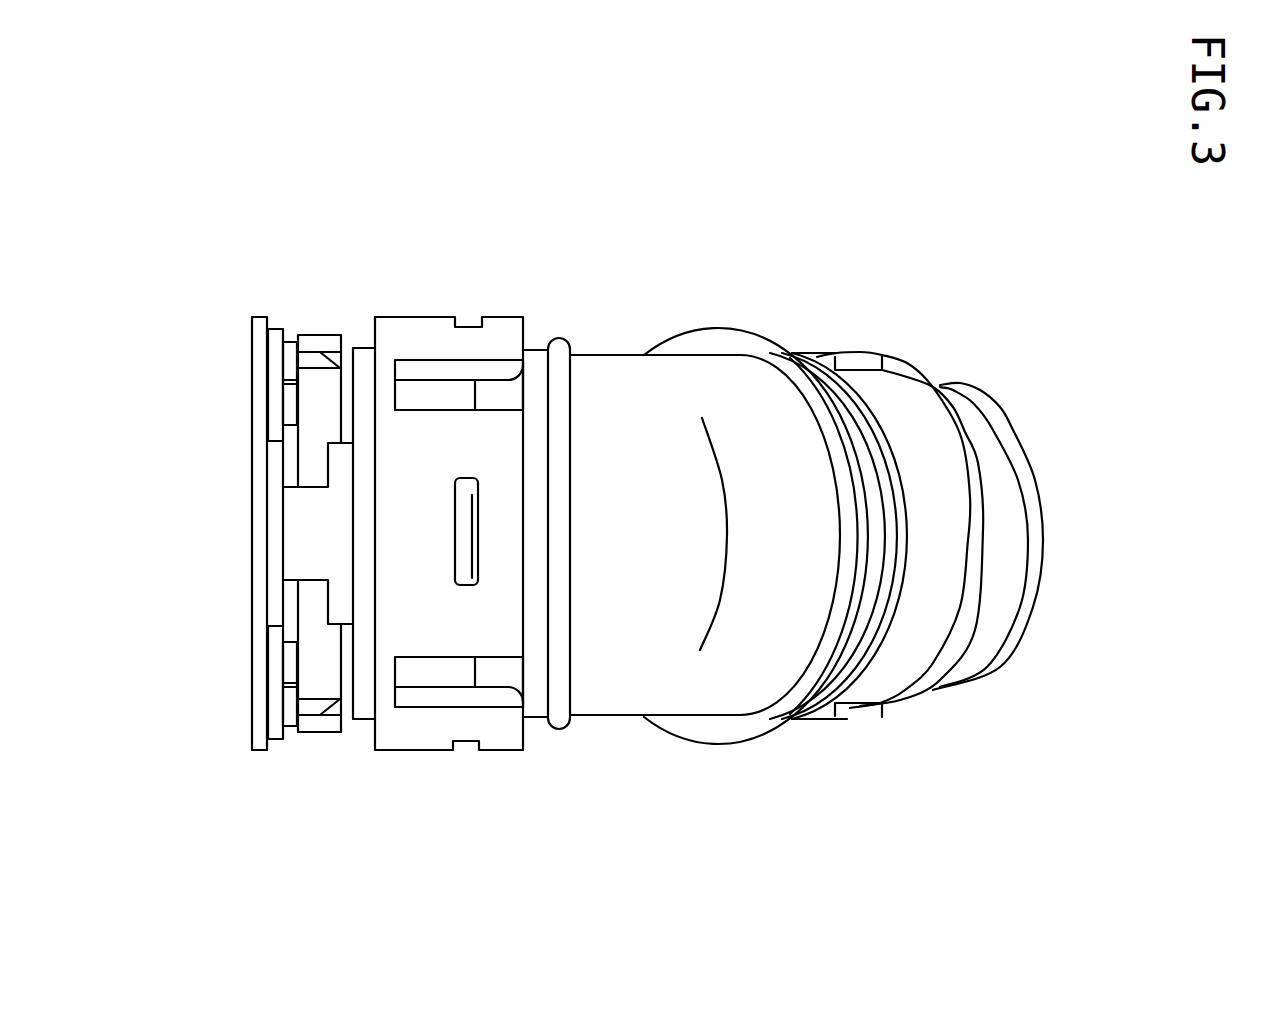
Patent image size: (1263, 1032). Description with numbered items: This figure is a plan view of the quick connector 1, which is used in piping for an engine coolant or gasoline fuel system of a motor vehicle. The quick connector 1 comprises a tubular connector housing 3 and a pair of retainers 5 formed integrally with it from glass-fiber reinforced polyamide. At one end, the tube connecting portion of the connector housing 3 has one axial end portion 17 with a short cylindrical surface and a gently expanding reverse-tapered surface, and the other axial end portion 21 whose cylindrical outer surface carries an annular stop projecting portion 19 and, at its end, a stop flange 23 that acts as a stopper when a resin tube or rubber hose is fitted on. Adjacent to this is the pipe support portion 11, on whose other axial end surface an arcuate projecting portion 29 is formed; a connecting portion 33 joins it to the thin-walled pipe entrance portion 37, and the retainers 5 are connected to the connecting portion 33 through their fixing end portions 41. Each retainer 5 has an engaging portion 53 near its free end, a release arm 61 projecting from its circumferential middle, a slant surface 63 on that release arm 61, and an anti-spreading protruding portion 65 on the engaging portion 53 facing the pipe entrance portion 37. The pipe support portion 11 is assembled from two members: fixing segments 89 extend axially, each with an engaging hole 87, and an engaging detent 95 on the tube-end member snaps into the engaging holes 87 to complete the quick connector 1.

The quick connector 1 is at (78, 191).
The connector housing 3 is at (614, 325).
The retainer 5 is at (327, 532).
The pipe support portion 11 is at (460, 397).
The one axial end portion 17 is at (962, 417).
The annular stop projecting portion 19 is at (845, 390).
The other axial end portion 21 is at (893, 397).
The stop flange 23 is at (762, 350).
The arcuate projecting portion 29 is at (365, 393).
The connecting portion 33 is at (318, 530).
The pipe entrance portion 37 is at (258, 418).
The fixing end portion 41 is at (318, 480).
The engaging portion 53 is at (293, 362).
The release arm 61 is at (308, 358).
The slant surface 63 is at (335, 352).
The anti-spreading protruding portion 65 is at (290, 400).
The engaging hole 87 is at (470, 527).
The fixing segment 89 is at (423, 525).
The engaging detent 95 is at (472, 503).